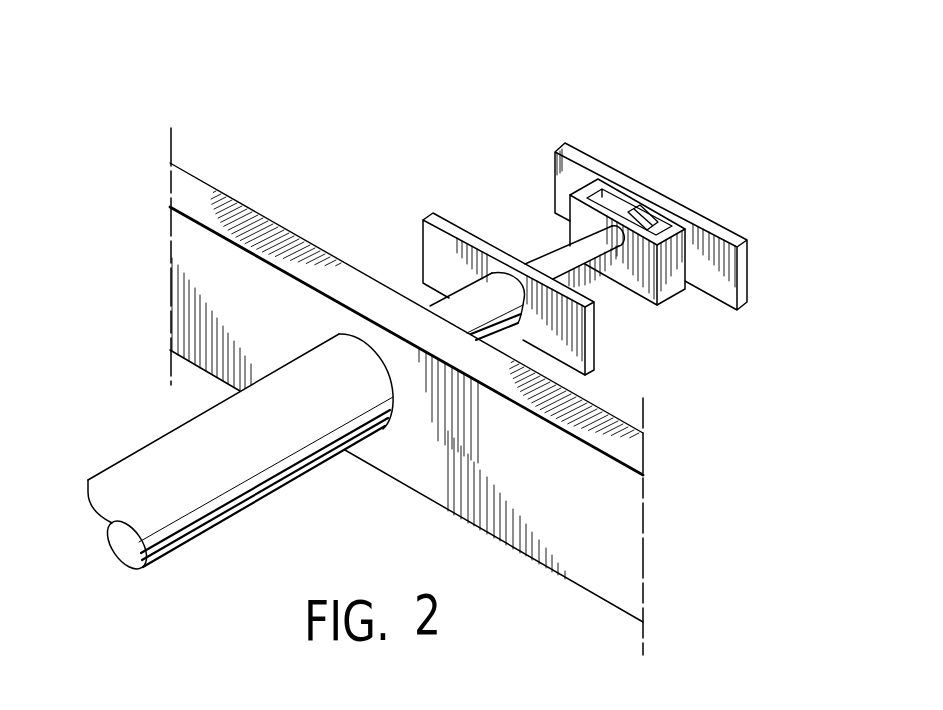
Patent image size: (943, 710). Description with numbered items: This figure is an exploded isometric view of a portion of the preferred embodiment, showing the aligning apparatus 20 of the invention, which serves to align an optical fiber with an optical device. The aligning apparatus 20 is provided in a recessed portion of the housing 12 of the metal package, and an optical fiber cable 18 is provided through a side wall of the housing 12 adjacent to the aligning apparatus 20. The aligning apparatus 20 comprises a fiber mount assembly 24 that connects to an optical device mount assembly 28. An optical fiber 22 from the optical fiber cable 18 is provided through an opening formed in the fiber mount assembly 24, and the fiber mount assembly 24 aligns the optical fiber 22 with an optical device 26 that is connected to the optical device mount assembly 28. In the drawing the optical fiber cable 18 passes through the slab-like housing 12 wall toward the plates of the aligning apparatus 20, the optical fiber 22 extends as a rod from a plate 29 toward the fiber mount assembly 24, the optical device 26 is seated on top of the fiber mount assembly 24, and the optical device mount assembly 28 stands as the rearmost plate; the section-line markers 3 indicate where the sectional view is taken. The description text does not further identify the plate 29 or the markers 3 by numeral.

The housing 12 is at (618, 503).
The optical fiber cable 18 is at (293, 481).
The aligning apparatus 20 is at (567, 112).
The optical fiber 22 is at (547, 258).
The fiber mount assembly 24 is at (688, 242).
The optical device 26 is at (650, 207).
The optical device mount assembly 28 is at (742, 267).
The front plate 29 is at (420, 247).
The section line 3- 3 is at (425, 187).